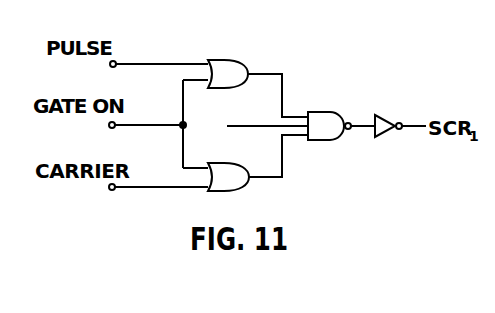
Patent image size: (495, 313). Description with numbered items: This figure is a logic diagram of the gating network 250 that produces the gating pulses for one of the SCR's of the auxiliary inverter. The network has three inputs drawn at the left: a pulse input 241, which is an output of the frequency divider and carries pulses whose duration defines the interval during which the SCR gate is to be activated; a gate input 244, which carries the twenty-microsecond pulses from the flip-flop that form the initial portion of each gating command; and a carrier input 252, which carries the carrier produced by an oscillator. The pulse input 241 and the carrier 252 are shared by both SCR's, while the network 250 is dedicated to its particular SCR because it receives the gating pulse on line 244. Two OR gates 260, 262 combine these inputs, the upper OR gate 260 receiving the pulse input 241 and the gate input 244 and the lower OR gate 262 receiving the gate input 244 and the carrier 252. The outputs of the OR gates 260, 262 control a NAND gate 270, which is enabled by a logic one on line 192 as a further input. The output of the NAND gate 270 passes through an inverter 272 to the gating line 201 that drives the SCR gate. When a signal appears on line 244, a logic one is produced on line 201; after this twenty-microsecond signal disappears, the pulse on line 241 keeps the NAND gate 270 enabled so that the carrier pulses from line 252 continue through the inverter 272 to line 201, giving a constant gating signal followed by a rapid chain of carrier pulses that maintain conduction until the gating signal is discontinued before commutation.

The pulse input 241 is at (150, 62).
The gate input 244 is at (157, 127).
The carrier input 252 is at (157, 191).
The OR gate 260 is at (226, 58).
The OR gate 262 is at (243, 182).
The gating network 250 is at (264, 54).
The enabling line 192 is at (257, 125).
The NAND gate 270 is at (324, 112).
The inverter 272 is at (386, 120).
The gating line 201 is at (411, 129).